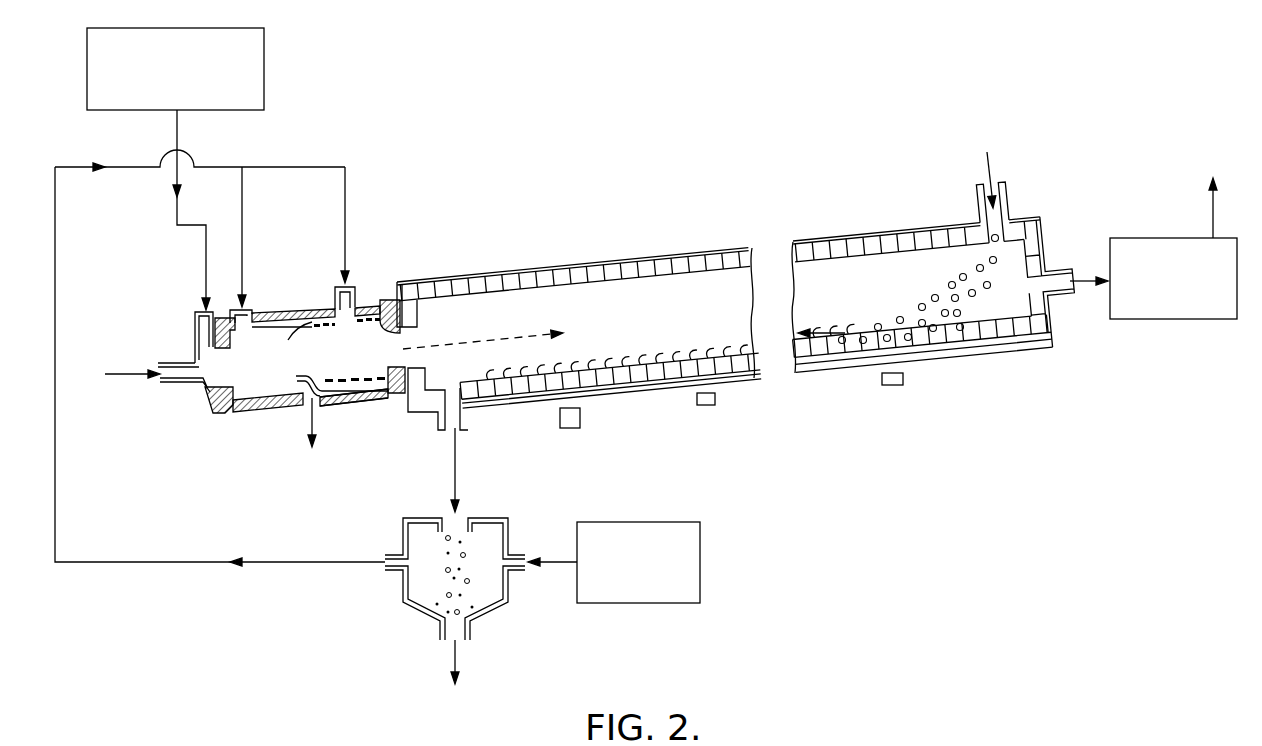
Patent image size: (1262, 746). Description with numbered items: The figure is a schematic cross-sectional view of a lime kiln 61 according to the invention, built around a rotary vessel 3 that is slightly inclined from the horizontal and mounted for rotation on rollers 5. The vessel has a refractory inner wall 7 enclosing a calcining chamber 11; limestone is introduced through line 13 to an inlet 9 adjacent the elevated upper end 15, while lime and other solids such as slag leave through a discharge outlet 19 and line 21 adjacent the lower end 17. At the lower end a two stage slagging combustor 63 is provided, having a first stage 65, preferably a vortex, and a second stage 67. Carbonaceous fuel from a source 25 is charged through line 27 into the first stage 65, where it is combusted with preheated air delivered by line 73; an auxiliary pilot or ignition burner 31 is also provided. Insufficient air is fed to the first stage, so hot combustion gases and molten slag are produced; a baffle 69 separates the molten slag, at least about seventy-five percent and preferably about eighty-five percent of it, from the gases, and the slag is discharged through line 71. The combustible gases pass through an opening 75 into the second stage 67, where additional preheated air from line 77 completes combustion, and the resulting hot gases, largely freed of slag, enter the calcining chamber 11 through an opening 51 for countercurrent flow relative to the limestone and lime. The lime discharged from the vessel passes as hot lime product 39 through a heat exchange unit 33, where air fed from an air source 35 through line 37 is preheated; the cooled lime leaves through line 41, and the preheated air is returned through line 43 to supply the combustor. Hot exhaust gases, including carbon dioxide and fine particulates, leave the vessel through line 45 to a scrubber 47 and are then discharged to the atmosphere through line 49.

The rotary vessel 3 is at (483, 278).
The rollers 5 is at (704, 408).
The refractory inner wall 7 is at (606, 290).
The inlet 9 is at (980, 206).
The calcining chamber 11 is at (576, 302).
The line 13 is at (990, 152).
The upper end 15 is at (1052, 236).
The lower end 17 is at (385, 291).
The discharge outlet 19 is at (470, 418).
The line 21 is at (455, 468).
The source 25 is at (264, 85).
The line 27 is at (202, 253).
The auxiliary pilot or ignition burner 31 is at (180, 362).
The heat exchange unit 33 is at (467, 570).
The air source 35 is at (700, 567).
The line 37 is at (562, 566).
The hot lime product 39 is at (450, 597).
The line 41 is at (460, 652).
The line 43 is at (57, 482).
The line 45 is at (1073, 293).
The scrubber 47 is at (1226, 320).
The line 49 is at (1213, 220).
The opening 51 is at (441, 333).
The lime kiln 61 is at (576, 245).
The two stage slagging combustor 63 is at (287, 306).
The first stage 65 is at (238, 418).
The second stage 67 is at (387, 398).
The baffle 69 is at (296, 378).
The line 71 is at (307, 418).
The line 73 is at (242, 225).
The opening 75 is at (294, 355).
The line 77 is at (345, 225).